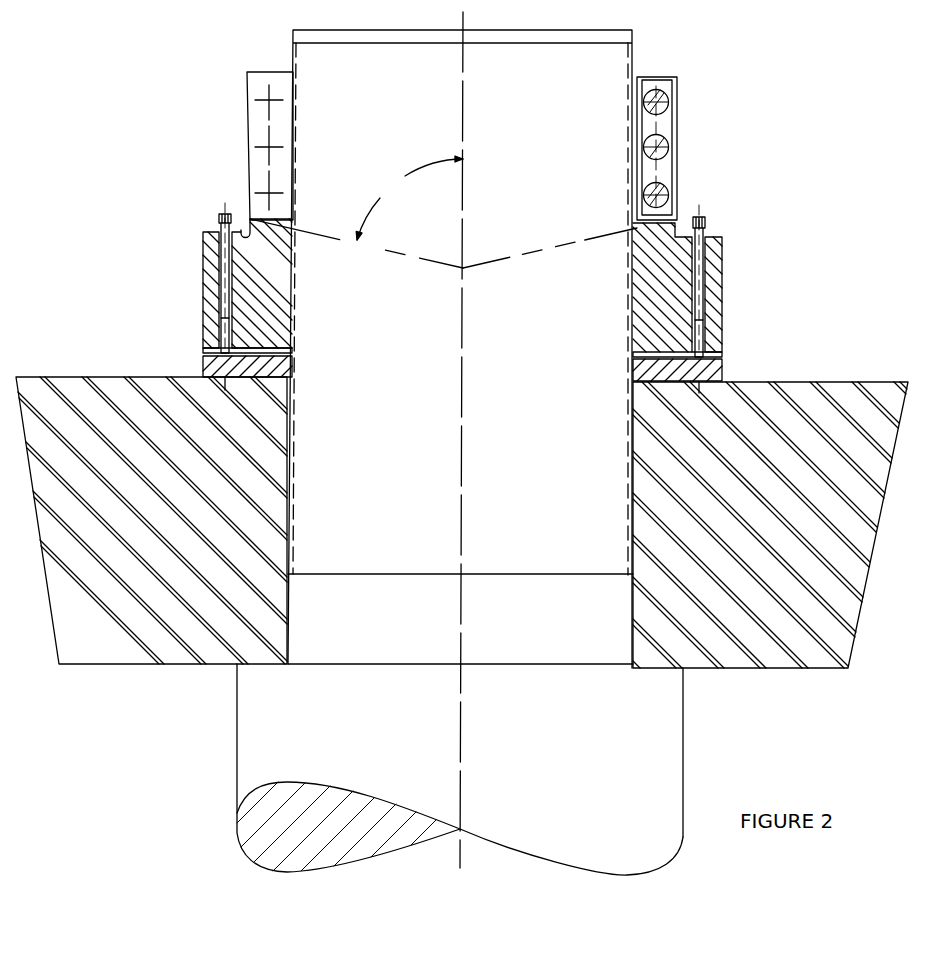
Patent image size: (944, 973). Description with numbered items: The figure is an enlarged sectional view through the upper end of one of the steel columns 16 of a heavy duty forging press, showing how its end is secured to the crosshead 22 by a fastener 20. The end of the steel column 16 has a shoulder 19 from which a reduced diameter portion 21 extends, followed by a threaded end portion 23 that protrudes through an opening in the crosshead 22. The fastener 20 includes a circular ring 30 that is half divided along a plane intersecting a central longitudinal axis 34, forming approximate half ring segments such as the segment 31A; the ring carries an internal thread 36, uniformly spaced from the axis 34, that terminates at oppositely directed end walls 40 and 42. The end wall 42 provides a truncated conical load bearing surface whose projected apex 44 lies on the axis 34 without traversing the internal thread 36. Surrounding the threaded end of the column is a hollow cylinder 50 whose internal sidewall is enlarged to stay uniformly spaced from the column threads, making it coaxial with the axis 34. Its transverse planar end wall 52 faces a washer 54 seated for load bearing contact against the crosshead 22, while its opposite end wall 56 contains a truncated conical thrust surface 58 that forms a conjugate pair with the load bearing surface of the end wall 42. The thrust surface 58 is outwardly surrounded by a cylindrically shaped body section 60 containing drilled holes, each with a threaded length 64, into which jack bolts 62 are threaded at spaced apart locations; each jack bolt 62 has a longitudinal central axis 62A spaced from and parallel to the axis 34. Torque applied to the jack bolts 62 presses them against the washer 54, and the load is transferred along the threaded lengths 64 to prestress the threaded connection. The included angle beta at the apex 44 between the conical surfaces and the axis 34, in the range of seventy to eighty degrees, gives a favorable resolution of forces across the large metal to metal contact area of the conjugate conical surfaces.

The steel column 16 is at (250, 745).
The shoulder 19 is at (657, 667).
The fastener 20 is at (742, 207).
The reduced diameter portion 21 is at (359, 619).
The crosshead 22 is at (840, 382).
The threaded end portion 23 is at (414, 377).
The circular ring 30 is at (241, 68).
The half ring segment 31A is at (677, 93).
The central longitudinal axis 34 is at (464, 24).
The internal thread 36 is at (295, 104).
The end wall 40 is at (650, 77).
The end wall 42 is at (244, 232).
The projected apex 44 is at (466, 272).
The hollow cylinder 50 is at (449, 306).
The transverse planar end wall 52 is at (207, 352).
The washer 54 is at (207, 374).
The end wall 56 is at (212, 232).
The truncated conical thrust surface 58 is at (266, 235).
The body section 60 is at (686, 201).
The jack bolt 62 is at (222, 262).
The longitudinal central axis of jack bolt 62A is at (227, 378).
The threaded length 64 is at (223, 320).